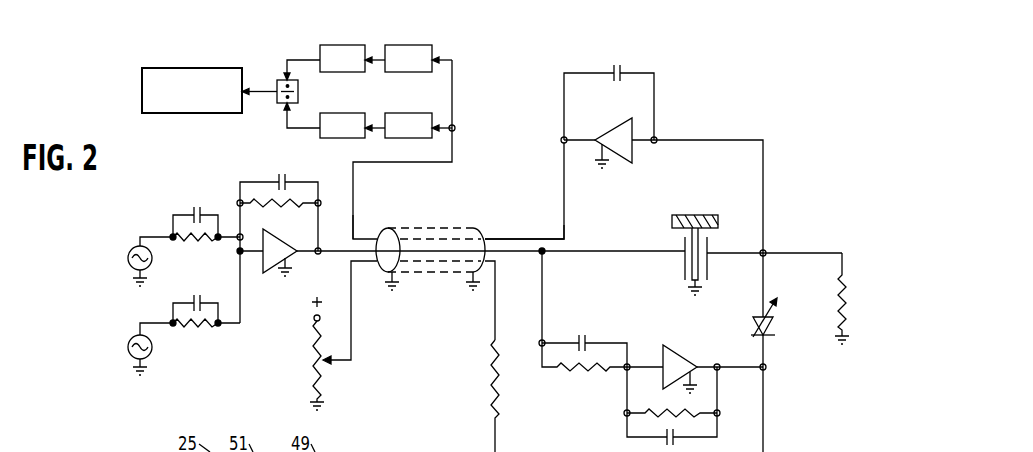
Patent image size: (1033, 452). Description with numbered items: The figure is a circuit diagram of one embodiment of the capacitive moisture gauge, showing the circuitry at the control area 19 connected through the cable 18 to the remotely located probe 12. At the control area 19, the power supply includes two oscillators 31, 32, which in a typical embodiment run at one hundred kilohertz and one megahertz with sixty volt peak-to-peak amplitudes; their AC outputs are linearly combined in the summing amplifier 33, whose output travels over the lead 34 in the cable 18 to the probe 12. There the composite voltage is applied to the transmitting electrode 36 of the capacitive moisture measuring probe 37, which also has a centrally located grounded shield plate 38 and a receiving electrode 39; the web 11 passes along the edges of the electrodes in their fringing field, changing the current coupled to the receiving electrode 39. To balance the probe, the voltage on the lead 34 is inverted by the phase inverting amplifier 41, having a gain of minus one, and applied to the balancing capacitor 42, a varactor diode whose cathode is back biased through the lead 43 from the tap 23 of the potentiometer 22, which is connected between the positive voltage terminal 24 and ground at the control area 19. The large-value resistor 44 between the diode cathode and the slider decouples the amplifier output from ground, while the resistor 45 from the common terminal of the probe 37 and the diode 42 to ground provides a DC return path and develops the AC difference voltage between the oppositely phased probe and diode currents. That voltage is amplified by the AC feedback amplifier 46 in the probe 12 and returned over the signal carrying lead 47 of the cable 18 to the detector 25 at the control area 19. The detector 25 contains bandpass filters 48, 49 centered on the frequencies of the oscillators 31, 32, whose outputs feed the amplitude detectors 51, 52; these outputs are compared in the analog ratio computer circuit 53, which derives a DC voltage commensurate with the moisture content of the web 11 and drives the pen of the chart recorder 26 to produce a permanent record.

The web 11 is at (707, 218).
The probe 12 is at (547, 152).
The cable 18 is at (446, 228).
The control area 19 is at (155, 200).
The potentiometer 22 is at (312, 368).
The tap 23 is at (338, 365).
The terminal 24 is at (314, 318).
The detector 25 is at (465, 65).
The chart recorder 26 is at (222, 113).
The oscillator 31 is at (128, 262).
The oscillator 32 is at (151, 343).
The summing amplifier 33 is at (222, 189).
The lead 34 is at (344, 249).
The transmitting electrode 36 is at (683, 266).
The capacitive moisture measuring probe 37 is at (687, 251).
The shield plate 38 is at (690, 288).
The receiving electrode 39 is at (712, 246).
The phase inverting amplifier 41 is at (650, 333).
The balancing capacitor 42 is at (771, 329).
The lead 43 is at (495, 298).
The resistor 44 is at (490, 372).
The resistor 45 is at (840, 300).
The AC feedback amplifier 46 is at (690, 113).
The signal carrying lead 47 is at (354, 214).
The bandpass filter 48 is at (413, 113).
The bandpass filter 49 is at (428, 28).
The amplitude detector 51 is at (375, 45).
The amplitude detector 52 is at (341, 113).
The analog ratio computer circuit 53 is at (280, 80).